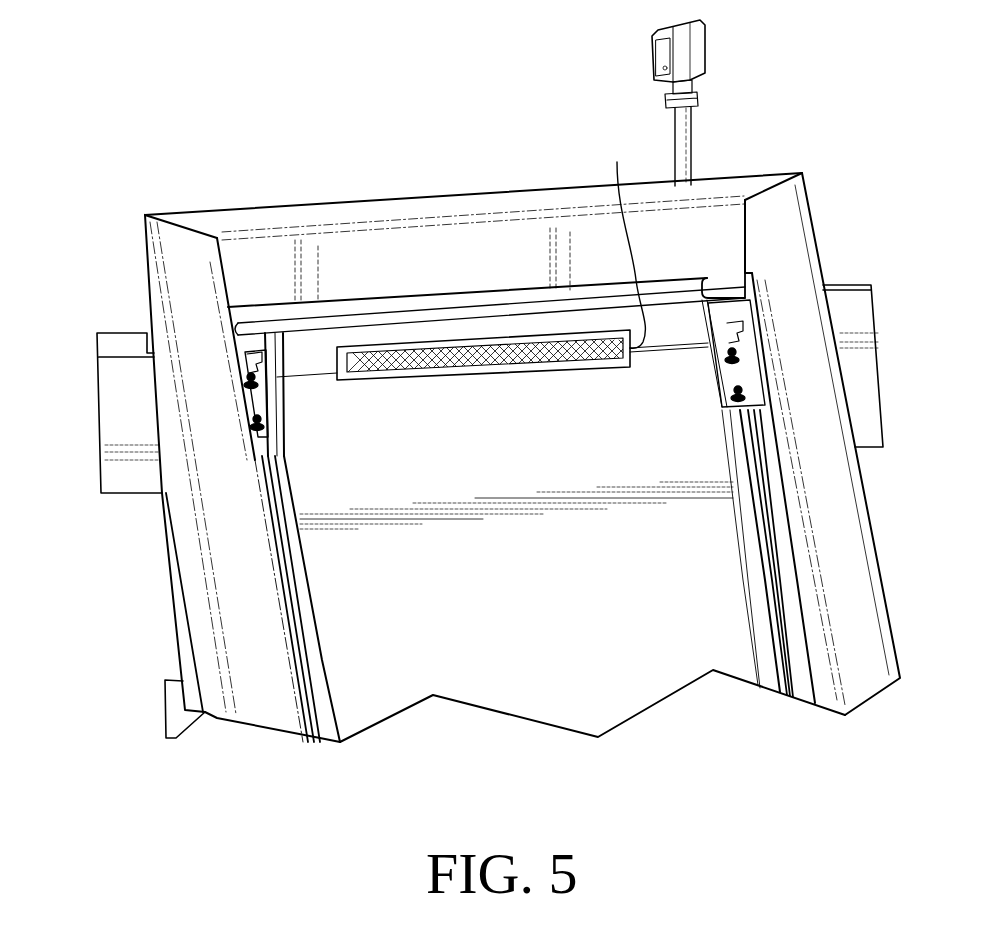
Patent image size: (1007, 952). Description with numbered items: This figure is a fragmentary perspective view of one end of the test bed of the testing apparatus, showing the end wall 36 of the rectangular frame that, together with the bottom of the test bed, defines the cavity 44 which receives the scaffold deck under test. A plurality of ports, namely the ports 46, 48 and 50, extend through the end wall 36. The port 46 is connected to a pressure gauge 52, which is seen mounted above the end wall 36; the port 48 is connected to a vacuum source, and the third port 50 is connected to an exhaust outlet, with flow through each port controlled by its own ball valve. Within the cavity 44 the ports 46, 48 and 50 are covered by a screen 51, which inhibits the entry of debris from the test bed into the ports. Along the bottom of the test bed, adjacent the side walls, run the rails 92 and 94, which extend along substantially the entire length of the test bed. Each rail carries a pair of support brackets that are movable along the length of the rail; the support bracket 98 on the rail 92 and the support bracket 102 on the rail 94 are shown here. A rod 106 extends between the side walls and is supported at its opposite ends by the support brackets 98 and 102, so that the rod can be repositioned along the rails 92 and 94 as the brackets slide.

The end wall 36 is at (262, 250).
The cavity 44 is at (720, 635).
The port 46 is at (598, 358).
The port 48 is at (476, 358).
The port 50 is at (368, 373).
The screen 51 is at (624, 239).
The pressure gauge 52 is at (697, 52).
The rail 92 is at (780, 543).
The rail 94 is at (297, 573).
The support bracket 98 is at (740, 372).
The support bracket 102 is at (262, 406).
The rod 106 is at (696, 285).